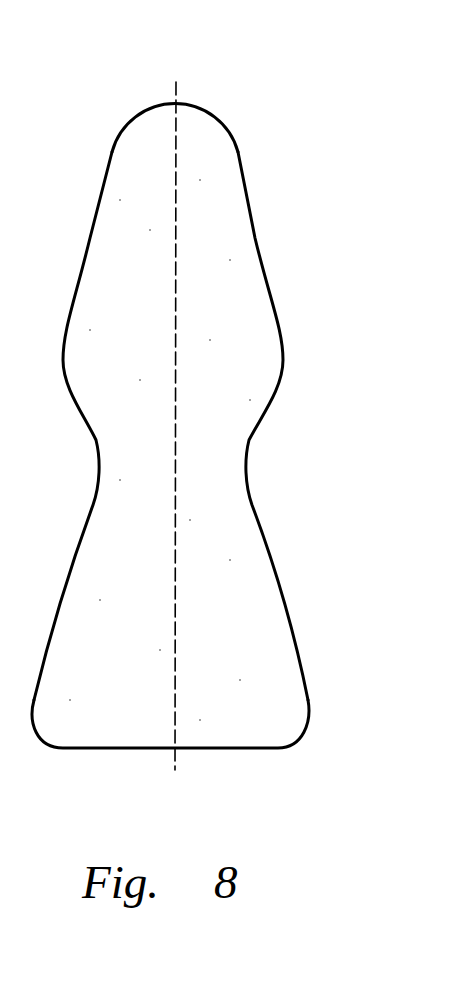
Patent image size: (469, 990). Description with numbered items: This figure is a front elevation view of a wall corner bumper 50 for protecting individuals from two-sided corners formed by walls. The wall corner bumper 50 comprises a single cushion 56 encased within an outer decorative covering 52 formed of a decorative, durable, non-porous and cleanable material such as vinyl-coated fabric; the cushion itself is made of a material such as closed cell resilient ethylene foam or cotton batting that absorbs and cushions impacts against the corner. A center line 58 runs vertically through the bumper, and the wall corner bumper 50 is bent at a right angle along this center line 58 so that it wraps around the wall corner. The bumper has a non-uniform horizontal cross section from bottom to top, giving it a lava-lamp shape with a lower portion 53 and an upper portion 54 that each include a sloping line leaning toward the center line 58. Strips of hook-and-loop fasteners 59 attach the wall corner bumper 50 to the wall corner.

The wall corner bumper 50 is at (325, 128).
The outer decorative covering 52 is at (226, 289).
The lower portion 53 is at (285, 747).
The upper portion 54 is at (193, 135).
The cushion 56 is at (247, 460).
The center line 58 is at (173, 705).
The hook-and-loop fasteners 59 is at (452, 464).